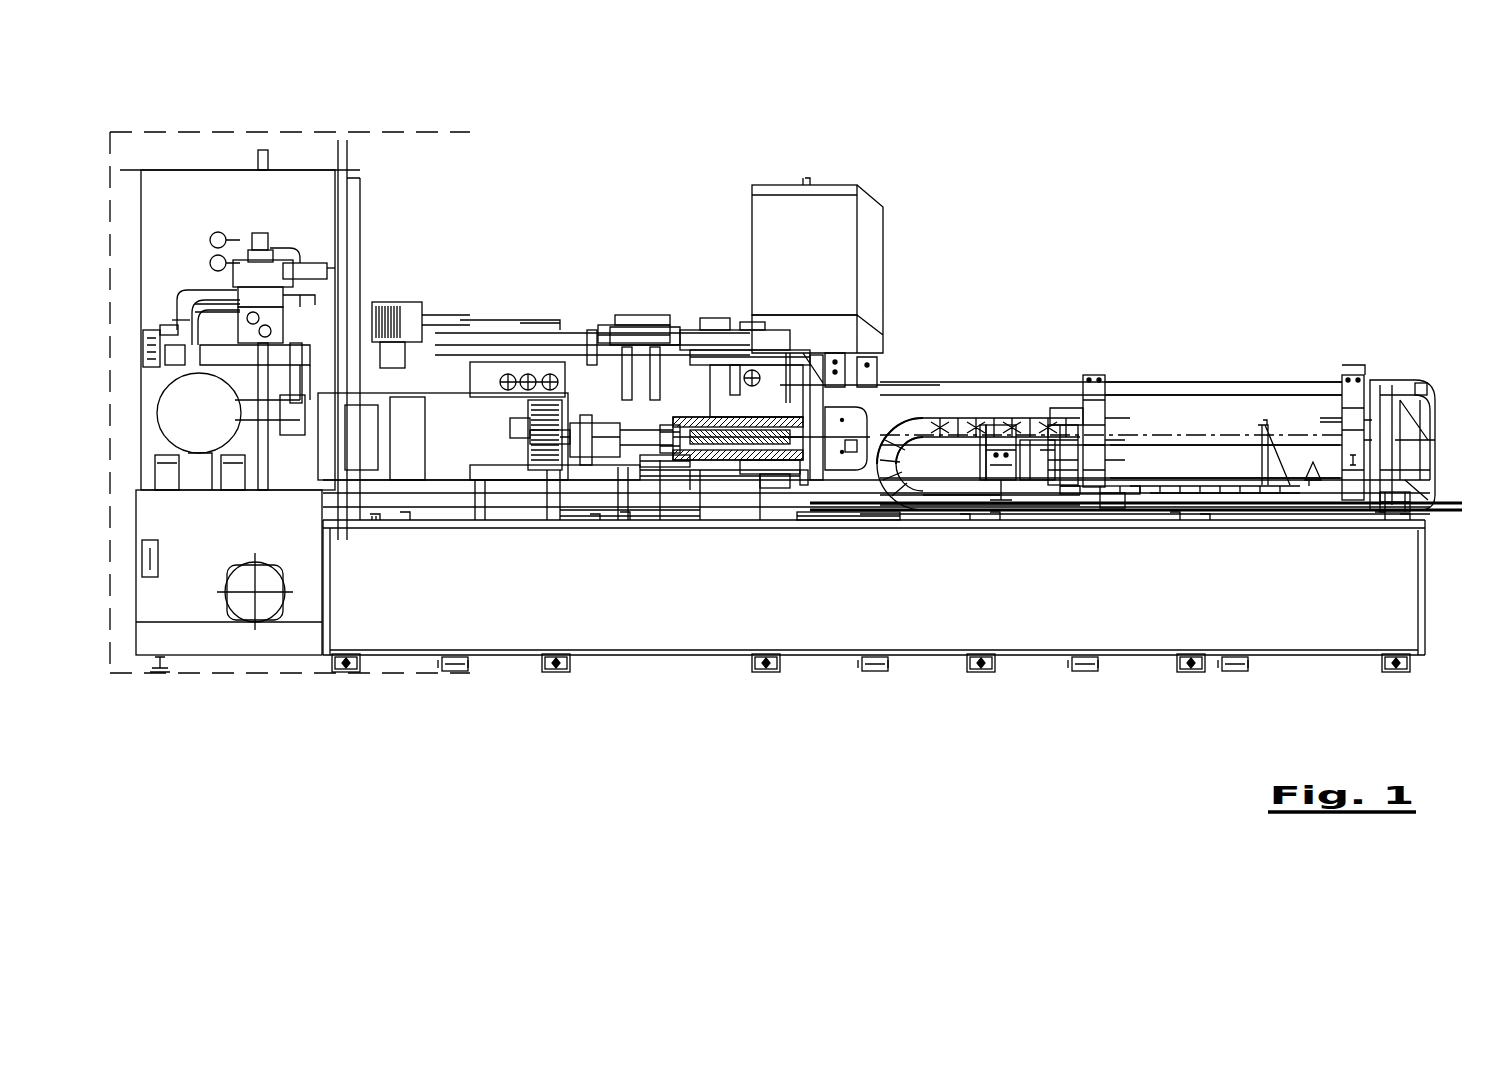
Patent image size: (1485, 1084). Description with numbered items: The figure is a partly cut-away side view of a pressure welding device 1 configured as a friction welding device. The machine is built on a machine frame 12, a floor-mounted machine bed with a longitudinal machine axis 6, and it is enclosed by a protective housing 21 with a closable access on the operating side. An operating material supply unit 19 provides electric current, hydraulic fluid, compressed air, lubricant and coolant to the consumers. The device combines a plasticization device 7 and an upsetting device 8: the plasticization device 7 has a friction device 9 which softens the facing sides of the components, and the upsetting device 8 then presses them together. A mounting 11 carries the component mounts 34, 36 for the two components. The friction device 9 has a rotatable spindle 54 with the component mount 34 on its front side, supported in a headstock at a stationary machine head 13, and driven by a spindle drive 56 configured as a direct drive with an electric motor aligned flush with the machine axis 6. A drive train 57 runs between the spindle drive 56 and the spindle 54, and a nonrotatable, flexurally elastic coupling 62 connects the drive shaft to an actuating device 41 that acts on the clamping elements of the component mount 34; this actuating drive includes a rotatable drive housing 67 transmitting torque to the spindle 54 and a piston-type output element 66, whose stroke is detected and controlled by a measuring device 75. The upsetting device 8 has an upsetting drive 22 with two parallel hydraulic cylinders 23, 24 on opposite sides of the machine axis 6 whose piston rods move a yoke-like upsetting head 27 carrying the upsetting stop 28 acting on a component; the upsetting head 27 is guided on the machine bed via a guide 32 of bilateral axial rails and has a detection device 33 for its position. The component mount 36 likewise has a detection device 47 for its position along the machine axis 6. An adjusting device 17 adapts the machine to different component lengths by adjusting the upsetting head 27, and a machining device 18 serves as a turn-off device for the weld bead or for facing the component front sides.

The pressure welding device 1 is at (1163, 208).
The machine axis 6 is at (1188, 430).
The plasticization device 7 is at (888, 412).
The upsetting device 8 is at (1335, 362).
The friction device 9 is at (807, 485).
The mounting 11 is at (870, 478).
The machine frame 12 is at (923, 602).
The machine head 13 is at (775, 380).
The adjusting device 17 is at (1135, 478).
The machining device 18 is at (797, 220).
The operating material supply unit 19 is at (212, 308).
The protective housing 21 is at (443, 130).
The upsetting drive 22 is at (1313, 482).
The drive unit 23 is at (1168, 486).
The drive unit 24 is at (1243, 388).
The upsetting head 27 is at (1408, 380).
The upsetting stop 28 is at (1358, 430).
The guide 32 is at (862, 493).
The detection device 33 is at (1395, 514).
The component mount 34 is at (849, 463).
The component mount 36 is at (1093, 410).
The actuating device 41 is at (676, 400).
The detection device 47 is at (1108, 510).
The spindle 54 is at (758, 463).
The spindle drive 56 is at (470, 425).
The drive train 57 is at (582, 470).
The coupling 62 is at (603, 418).
The output element 66 is at (703, 457).
The drive housing 67 is at (678, 458).
The measuring device 75 is at (668, 466).